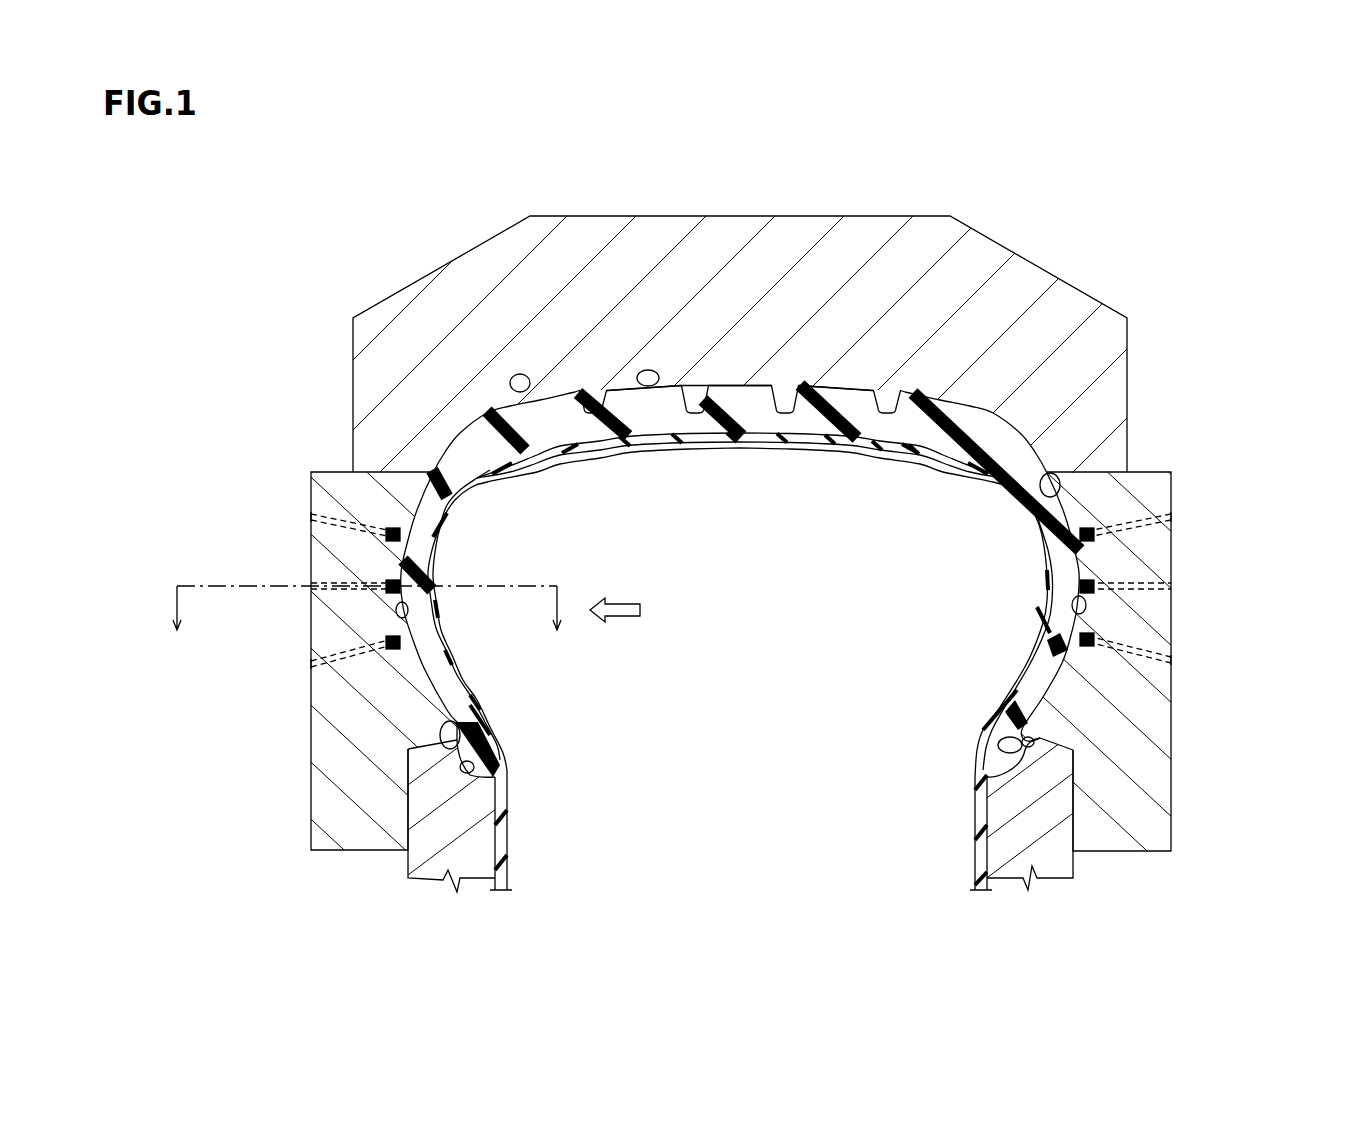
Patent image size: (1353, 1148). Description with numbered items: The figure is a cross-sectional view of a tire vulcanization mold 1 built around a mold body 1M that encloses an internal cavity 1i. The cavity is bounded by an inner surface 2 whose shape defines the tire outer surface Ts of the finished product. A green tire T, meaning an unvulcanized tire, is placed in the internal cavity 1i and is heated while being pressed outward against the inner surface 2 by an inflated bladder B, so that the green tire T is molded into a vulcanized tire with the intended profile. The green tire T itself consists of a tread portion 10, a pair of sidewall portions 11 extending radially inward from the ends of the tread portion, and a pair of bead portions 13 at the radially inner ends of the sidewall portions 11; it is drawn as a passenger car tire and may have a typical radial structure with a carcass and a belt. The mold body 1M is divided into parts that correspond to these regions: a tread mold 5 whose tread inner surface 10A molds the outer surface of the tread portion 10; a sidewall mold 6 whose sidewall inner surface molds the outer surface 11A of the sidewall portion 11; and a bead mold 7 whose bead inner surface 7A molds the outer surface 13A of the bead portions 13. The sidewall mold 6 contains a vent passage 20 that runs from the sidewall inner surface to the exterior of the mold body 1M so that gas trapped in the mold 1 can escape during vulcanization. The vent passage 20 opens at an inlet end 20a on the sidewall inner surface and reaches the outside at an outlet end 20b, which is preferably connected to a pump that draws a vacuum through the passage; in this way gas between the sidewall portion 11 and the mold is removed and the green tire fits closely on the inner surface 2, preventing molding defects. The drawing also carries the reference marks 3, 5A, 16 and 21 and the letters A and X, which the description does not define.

The tire vulcanization mold 1 is at (1152, 363).
The mold body 1M is at (1060, 313).
The tread mold 5 is at (985, 258).
The tread mold surface 5A is at (860, 385).
The inner surface 2 is at (1050, 473).
The side mold (6) 3 is at (1160, 550).
The sidewall mold 6 is at (318, 740).
The bead mold 7 is at (485, 867).
The bead inner surface 7A is at (470, 760).
The bladder B is at (510, 823).
The green tire T is at (740, 385).
The tire outer surface Ts is at (513, 383).
The tread portion 10 is at (752, 420).
The tread inner surface 10A is at (652, 390).
The belt edge 16 is at (463, 462).
The sidewall portion 11 is at (423, 537).
The outer surface of the sidewall portion 11A is at (420, 620).
The bead portion 13 is at (490, 745).
The outer surface of the bead portions 13A is at (465, 720).
The internal cavity 1i is at (762, 649).
The vent passage 20 is at (350, 520).
The inlet end 20a is at (440, 640).
The outlet end 20b is at (311, 667).
The vent passage 21 is at (393, 583).
The section line A- A is at (368, 612).
The direction X is at (630, 612).